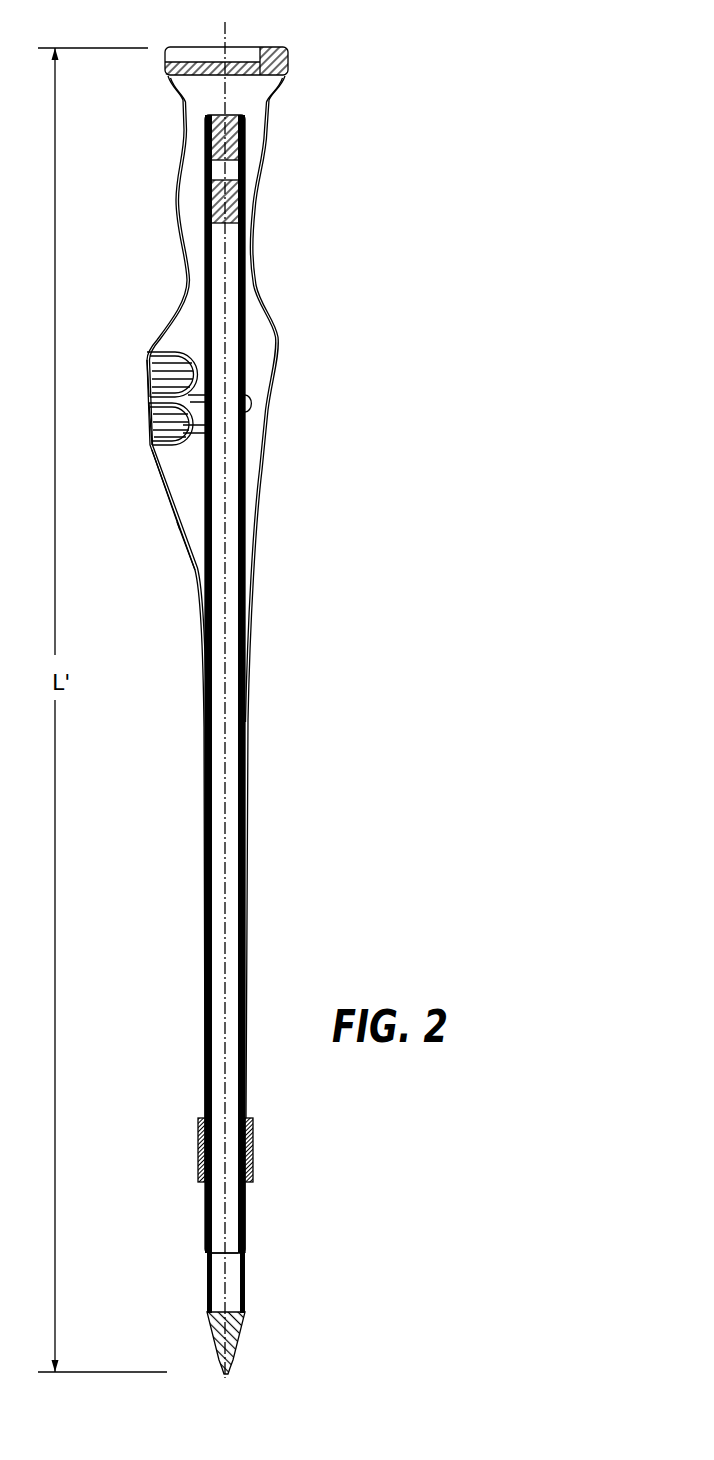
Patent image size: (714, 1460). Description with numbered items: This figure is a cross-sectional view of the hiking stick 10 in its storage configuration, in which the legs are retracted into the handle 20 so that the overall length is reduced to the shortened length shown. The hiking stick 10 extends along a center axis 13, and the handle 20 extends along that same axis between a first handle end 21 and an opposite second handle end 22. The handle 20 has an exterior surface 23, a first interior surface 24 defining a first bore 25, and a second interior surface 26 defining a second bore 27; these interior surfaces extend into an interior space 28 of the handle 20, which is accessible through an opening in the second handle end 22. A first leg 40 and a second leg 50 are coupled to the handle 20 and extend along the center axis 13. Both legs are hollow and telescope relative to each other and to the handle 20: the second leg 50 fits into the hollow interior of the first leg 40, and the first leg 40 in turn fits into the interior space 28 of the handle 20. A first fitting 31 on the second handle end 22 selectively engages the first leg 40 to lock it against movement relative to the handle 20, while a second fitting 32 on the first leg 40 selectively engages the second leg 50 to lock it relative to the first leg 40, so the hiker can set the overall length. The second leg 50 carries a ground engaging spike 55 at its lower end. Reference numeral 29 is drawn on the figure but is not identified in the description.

The hiking stick 10 is at (383, 720).
The center axis 13 is at (225, 44).
The handle 20 is at (260, 533).
The first handle end 21 is at (252, 43).
The second handle end 22 is at (220, 1137).
The exterior surface 23 is at (163, 487).
The first interior surface 24 is at (165, 368).
The first bore 25 is at (147, 378).
The second interior surface 26 is at (163, 433).
The second bore 27 is at (147, 428).
The interior space 28 is at (191, 489).
The cap opening 29 is at (188, 47).
The first fitting 31 is at (253, 1132).
The second fitting 32 is at (245, 1223).
The first leg 40 is at (183, 160).
The second leg 50 is at (245, 331).
The ground engaging spike 55 is at (243, 1318).